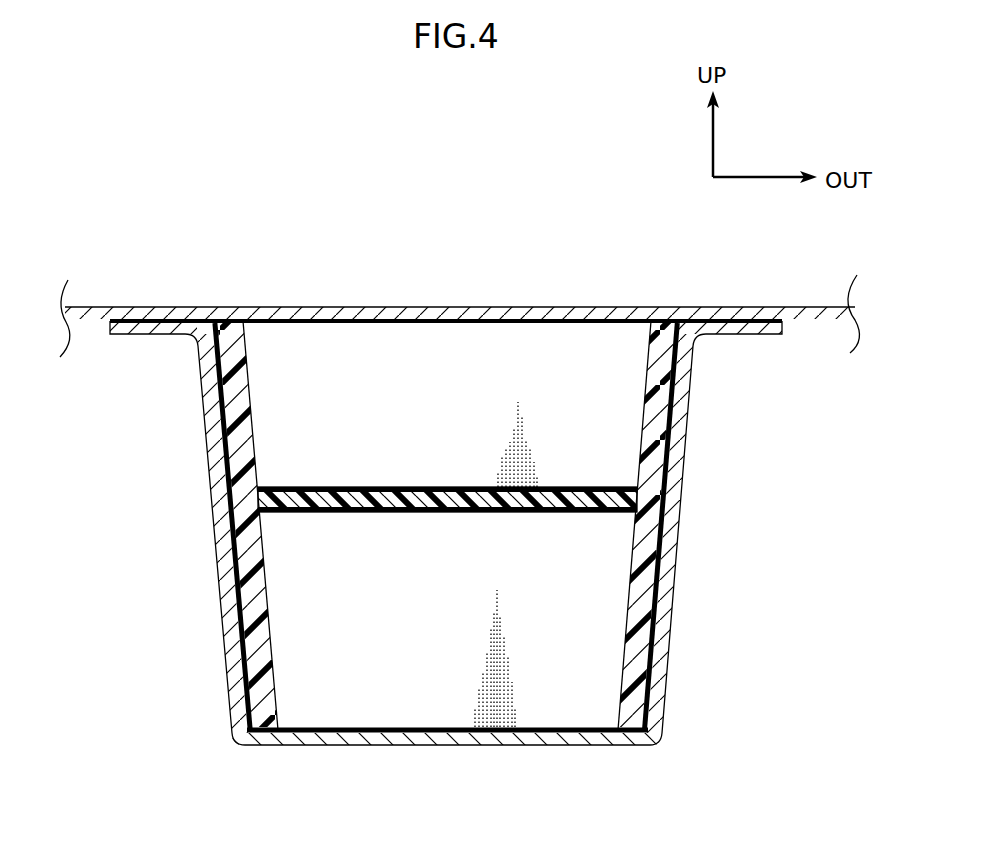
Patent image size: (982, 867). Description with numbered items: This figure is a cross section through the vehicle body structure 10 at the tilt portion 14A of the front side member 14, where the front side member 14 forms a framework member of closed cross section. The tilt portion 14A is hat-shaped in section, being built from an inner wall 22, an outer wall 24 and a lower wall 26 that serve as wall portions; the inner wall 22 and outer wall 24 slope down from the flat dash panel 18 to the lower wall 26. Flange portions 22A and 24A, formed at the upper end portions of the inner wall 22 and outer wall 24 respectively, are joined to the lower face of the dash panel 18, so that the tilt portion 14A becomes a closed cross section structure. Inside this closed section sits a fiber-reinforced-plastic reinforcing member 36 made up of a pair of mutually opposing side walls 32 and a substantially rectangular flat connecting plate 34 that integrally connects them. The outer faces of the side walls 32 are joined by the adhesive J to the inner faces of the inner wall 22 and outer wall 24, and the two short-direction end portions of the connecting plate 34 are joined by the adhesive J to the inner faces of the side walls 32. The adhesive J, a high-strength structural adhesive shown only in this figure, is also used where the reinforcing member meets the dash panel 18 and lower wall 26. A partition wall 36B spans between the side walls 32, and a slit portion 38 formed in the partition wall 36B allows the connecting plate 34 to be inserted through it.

The vehicle body structure 10 is at (230, 253).
The dash panel 18 is at (447, 306).
The adhesive J is at (544, 326).
The flange portion 22A is at (125, 335).
The flange portion 24A is at (737, 335).
The inner wall 22 is at (222, 558).
The outer wall 24 is at (675, 570).
The lower wall 26 is at (327, 746).
The partition wall 36B is at (384, 525).
The reinforcement member 36 is at (248, 688).
The side wall 32 is at (249, 430).
The connecting plate 34 is at (447, 501).
The slit portion 38 is at (372, 512).
The front side member 14 is at (533, 628).
The tilt portion 14A is at (497, 745).